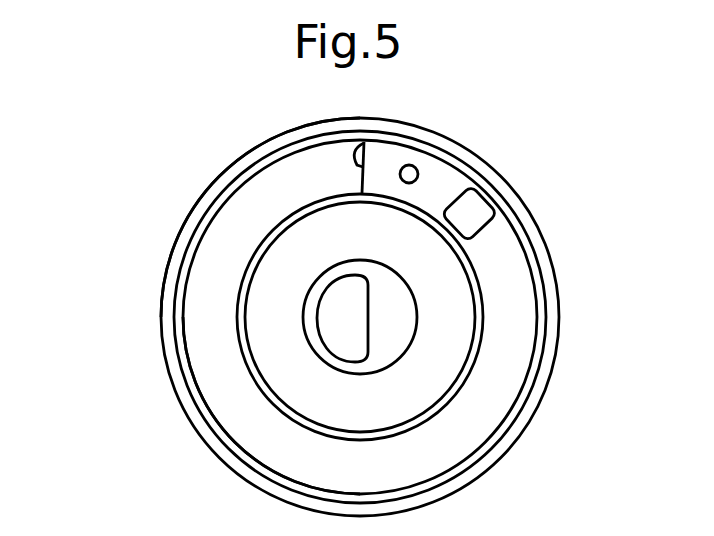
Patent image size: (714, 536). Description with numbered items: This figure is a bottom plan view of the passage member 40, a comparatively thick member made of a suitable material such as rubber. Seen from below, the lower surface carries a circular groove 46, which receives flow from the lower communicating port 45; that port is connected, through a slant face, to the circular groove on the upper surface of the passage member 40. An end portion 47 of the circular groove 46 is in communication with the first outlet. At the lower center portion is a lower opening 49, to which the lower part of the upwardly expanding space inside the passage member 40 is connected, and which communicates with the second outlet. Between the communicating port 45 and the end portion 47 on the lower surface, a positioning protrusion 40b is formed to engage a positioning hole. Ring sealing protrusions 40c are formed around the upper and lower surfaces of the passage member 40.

The passage member 40 is at (210, 155).
The positioning protrusion 40b is at (417, 168).
The ring sealing protrusion 40c is at (178, 281).
The lower communicating port 45 is at (483, 210).
The circular groove 46 is at (203, 360).
The end portion 47 is at (353, 152).
The lower opening 49 is at (357, 302).